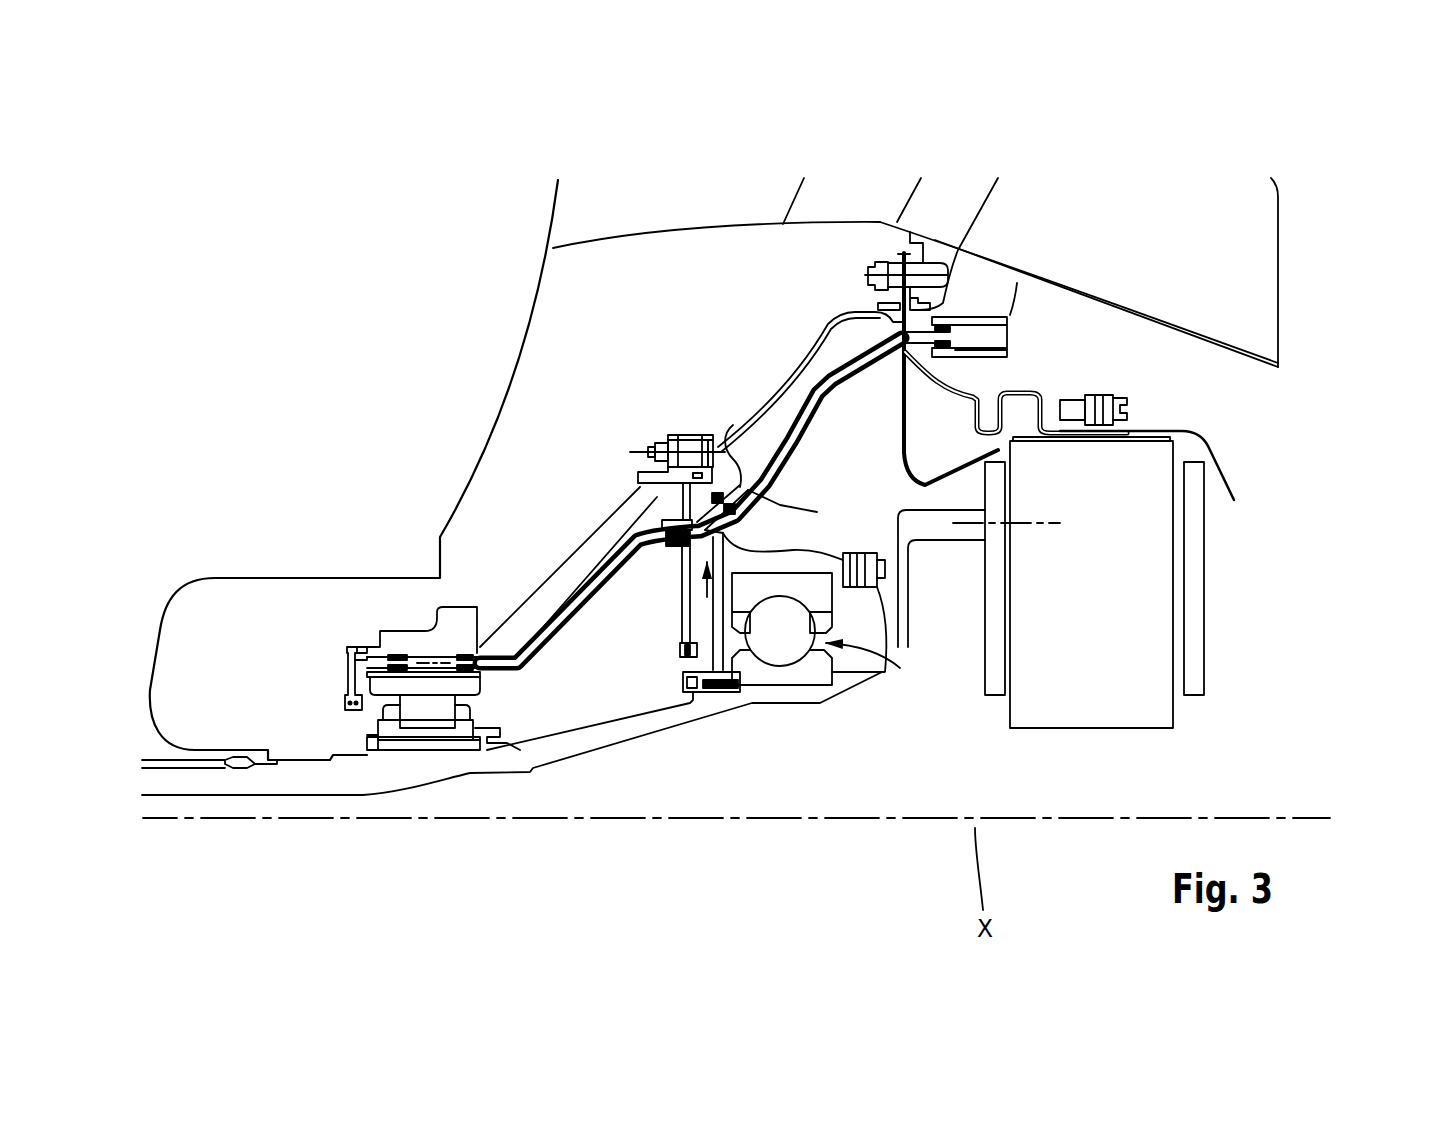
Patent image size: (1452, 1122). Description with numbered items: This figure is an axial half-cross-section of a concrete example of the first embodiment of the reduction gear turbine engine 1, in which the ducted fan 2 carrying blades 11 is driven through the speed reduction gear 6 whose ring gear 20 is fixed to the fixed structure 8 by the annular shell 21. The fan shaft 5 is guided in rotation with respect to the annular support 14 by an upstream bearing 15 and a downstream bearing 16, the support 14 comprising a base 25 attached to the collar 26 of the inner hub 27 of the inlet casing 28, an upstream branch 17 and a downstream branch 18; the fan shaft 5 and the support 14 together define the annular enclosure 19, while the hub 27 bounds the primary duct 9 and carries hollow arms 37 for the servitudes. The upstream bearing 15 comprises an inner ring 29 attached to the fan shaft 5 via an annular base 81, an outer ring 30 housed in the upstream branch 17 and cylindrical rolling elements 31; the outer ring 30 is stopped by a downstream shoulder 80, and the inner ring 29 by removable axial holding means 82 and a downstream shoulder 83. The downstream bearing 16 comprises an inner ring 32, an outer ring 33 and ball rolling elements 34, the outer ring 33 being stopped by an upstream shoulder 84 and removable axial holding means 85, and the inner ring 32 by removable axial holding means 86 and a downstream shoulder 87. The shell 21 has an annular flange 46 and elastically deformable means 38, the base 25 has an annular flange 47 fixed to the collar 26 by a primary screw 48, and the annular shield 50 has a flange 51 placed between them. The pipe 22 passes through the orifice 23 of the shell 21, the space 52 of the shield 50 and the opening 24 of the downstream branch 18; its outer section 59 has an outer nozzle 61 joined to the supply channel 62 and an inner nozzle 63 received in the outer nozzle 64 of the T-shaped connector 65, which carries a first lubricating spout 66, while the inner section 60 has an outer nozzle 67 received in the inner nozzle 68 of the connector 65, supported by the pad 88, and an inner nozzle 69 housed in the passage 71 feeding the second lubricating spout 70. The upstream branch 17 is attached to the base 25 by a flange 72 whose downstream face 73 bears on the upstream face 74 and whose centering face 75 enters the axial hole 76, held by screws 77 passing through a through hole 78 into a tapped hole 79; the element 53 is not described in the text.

The reduction gear turbine engine 1 is at (307, 227).
The ducted fan 2 is at (583, 170).
The fan shaft 5 is at (580, 757).
The speed reduction gear 6 is at (1190, 712).
The fixed structure 8 is at (1240, 155).
The primary duct 9 is at (939, 248).
The blades 11 is at (520, 213).
The annular support 14 is at (836, 303).
The upstream bearing 15 is at (358, 728).
The downstream bearing 16 is at (893, 620).
The upstream branch 17 is at (557, 560).
The downstream branch 18 is at (753, 543).
The annular enclosure 19 is at (605, 693).
The ring gear 20 is at (1175, 431).
The annular shell 21 is at (955, 380).
The pipe 22 is at (790, 407).
The orifice 23 is at (1067, 265).
The opening 24 is at (762, 512).
The base 25 is at (790, 357).
The collar 26 is at (955, 293).
The inner hub 27 is at (1288, 197).
The inlet casing 28 is at (1318, 245).
The inner ring 29 is at (393, 737).
The outer ring 30 is at (443, 685).
The rolling elements 31 is at (427, 710).
The inner ring 32 is at (752, 673).
The outer ring 33 is at (740, 593).
The rolling elements 34 is at (790, 632).
The hollow arms 37 is at (1245, 263).
The elastically deformable means 38 is at (1040, 397).
The annular flange 46 is at (906, 255).
The annular flange 47 is at (905, 255).
The primary screw 48 is at (872, 262).
The annular shield 50 is at (893, 398).
The flange 51 is at (897, 255).
The space 52 is at (897, 317).
The outer lip 53 is at (943, 260).
The outer section 59 is at (827, 373).
The inner section 60 is at (550, 617).
The outer nozzle 61 is at (1020, 268).
The supply channel 62 is at (1020, 283).
The inner nozzle 63 is at (742, 492).
The outer nozzle 64 is at (740, 485).
The connector 65 is at (714, 625).
The first lubricating spout 66 is at (689, 657).
The outer nozzle 67 is at (683, 622).
The inner nozzle 68 is at (613, 510).
The inner nozzle 69 is at (463, 652).
The second lubricating spout 70 is at (347, 690).
The passage 71 is at (405, 650).
The flange 72 is at (670, 437).
The downstream face 73 is at (683, 433).
The upstream face 74 is at (635, 379).
The centering face 75 is at (705, 453).
The axial hole 76 is at (670, 321).
The screws 77 is at (647, 450).
The through hole 78 is at (670, 437).
The tapped hole 79 is at (693, 433).
The downstream shoulder 80 is at (490, 683).
The annular base 81 is at (410, 748).
The removable axial holding means 82 is at (370, 748).
The downstream shoulder 83 is at (473, 733).
The upstream shoulder 84 is at (753, 668).
The removable axial holding means 85 is at (860, 588).
The removable axial holding means 86 is at (705, 692).
The downstream shoulder 87 is at (845, 685).
The pad 88 is at (655, 487).